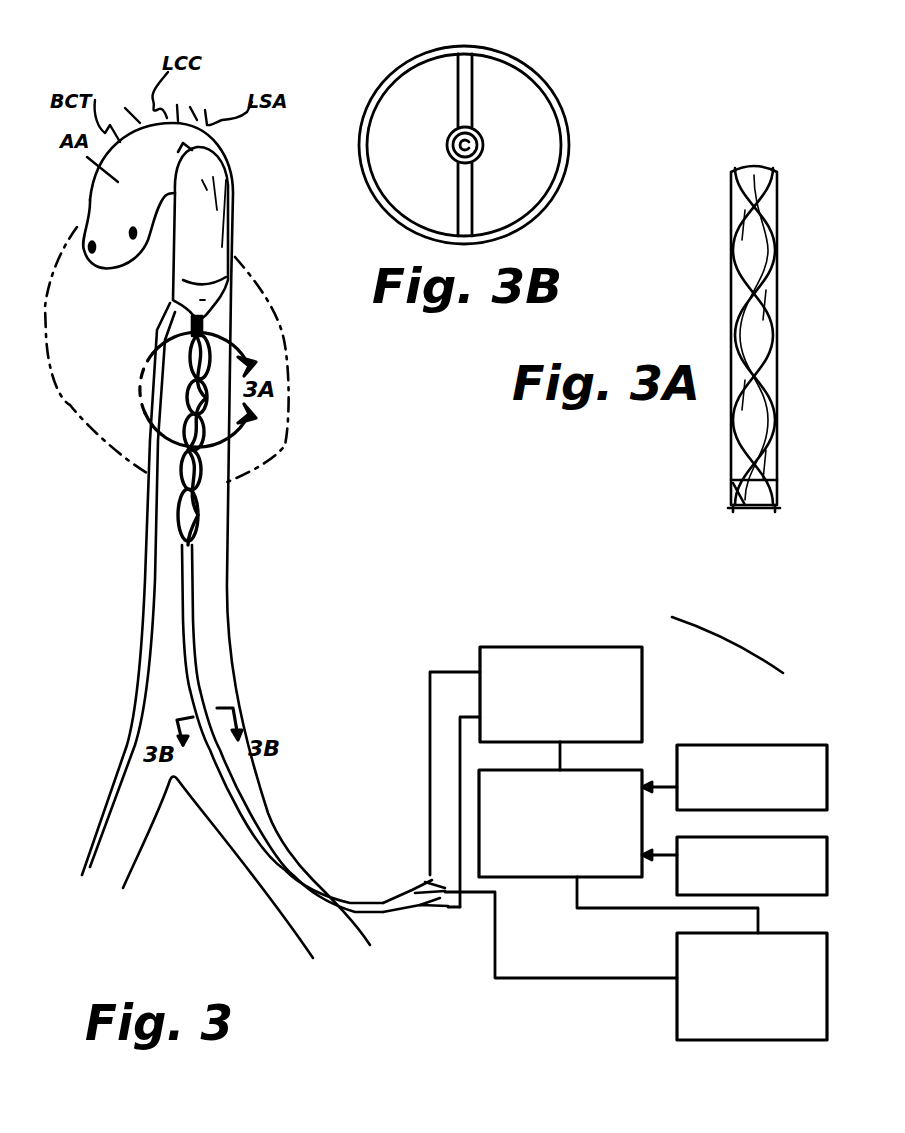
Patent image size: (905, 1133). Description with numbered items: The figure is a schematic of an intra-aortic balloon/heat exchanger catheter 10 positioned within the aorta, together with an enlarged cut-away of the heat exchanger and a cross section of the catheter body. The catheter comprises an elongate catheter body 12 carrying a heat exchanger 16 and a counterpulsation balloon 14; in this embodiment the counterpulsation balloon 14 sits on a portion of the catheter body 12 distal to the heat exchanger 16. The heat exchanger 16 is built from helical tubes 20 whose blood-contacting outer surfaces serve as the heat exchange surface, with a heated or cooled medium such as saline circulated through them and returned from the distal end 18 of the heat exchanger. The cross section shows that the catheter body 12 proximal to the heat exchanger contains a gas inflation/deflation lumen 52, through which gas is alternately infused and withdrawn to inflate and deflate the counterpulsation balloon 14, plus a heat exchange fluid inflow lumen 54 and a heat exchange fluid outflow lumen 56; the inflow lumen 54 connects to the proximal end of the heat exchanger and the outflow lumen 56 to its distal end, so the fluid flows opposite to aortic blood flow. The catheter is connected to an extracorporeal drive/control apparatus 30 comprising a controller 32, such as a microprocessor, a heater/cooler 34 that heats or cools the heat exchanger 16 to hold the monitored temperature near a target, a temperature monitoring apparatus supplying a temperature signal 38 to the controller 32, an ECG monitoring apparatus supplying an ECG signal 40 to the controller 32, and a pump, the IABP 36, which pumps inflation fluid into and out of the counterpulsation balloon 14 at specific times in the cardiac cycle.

In FIG. 3, the balloon/heat exchanger catheter 10 is at (200, 583).
In FIG. 3, the elongate catheter body 12 is at (193, 662).
In FIG. 3, the counterpulsation balloon 14 is at (212, 205).
In FIG. 3, the heat exchanger 16 is at (232, 350).
In FIG. 3A, the heat exchanger 16 is at (716, 252).
In FIG. 3A, the distal end fitting 18 is at (757, 513).
In FIG. 3A, the helical tubes 20 is at (740, 487).
In FIG. 3, the drive/control apparatus 30 is at (747, 643).
In FIG. 3, the controller 32 is at (508, 878).
In FIG. 3, the heater/cooler 34 is at (520, 648).
In FIG. 3, the intra-aortic balloon pump (IABP) 36 is at (677, 1016).
In FIG. 3, the temperature signal 38 is at (722, 745).
In FIG. 3, the ECG signal 40 is at (683, 882).
In FIG. 3B, the gas inflation/deflation lumen 52 is at (483, 137).
In FIG. 3B, the heat exchange fluid inflow lumen 54 is at (535, 158).
In FIG. 3B, the heat exchange fluid outflow lumen 56 is at (412, 92).